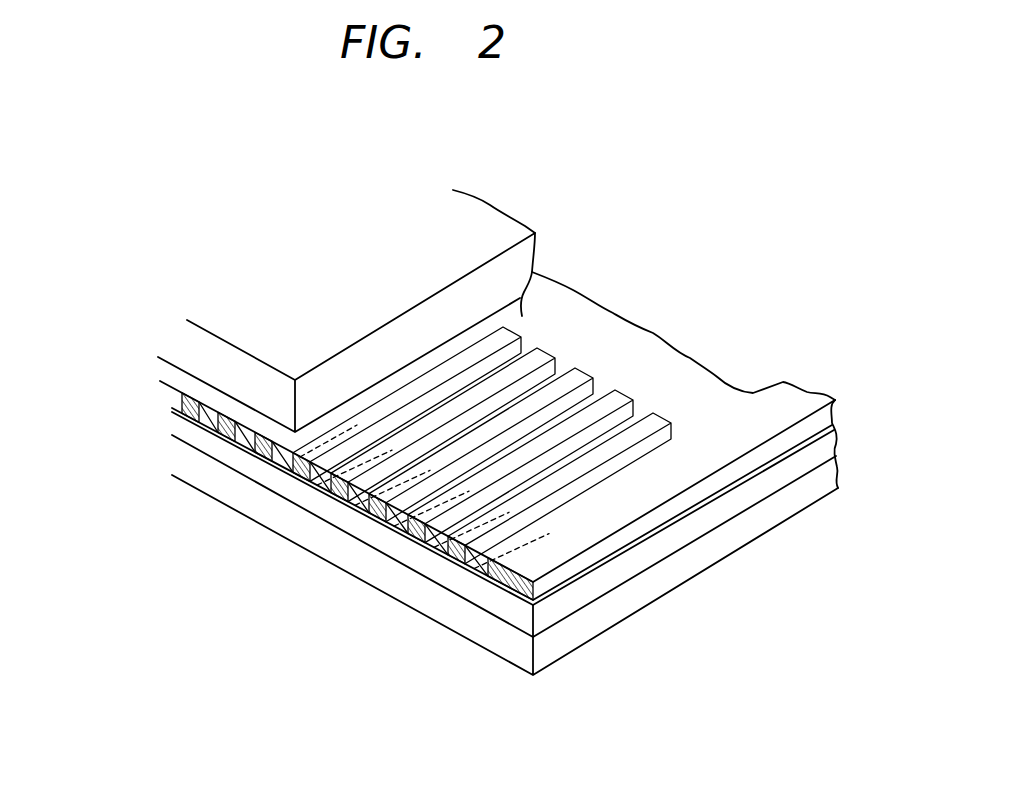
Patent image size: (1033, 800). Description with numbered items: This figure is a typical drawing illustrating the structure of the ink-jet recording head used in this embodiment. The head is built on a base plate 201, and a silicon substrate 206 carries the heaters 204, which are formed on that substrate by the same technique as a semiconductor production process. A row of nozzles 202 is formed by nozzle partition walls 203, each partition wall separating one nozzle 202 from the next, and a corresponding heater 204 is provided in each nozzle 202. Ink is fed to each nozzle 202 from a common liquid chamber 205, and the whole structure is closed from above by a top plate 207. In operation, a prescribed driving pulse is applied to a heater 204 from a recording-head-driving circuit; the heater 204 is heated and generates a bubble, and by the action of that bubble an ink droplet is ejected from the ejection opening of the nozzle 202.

The base plate 201 is at (627, 602).
The nozzle 202 is at (197, 430).
The nozzle partition wall 203 is at (630, 395).
The heater 204 is at (350, 550).
The common liquid chamber 205 is at (567, 313).
The silicon substrate 206 is at (257, 455).
The top plate 207 is at (488, 223).